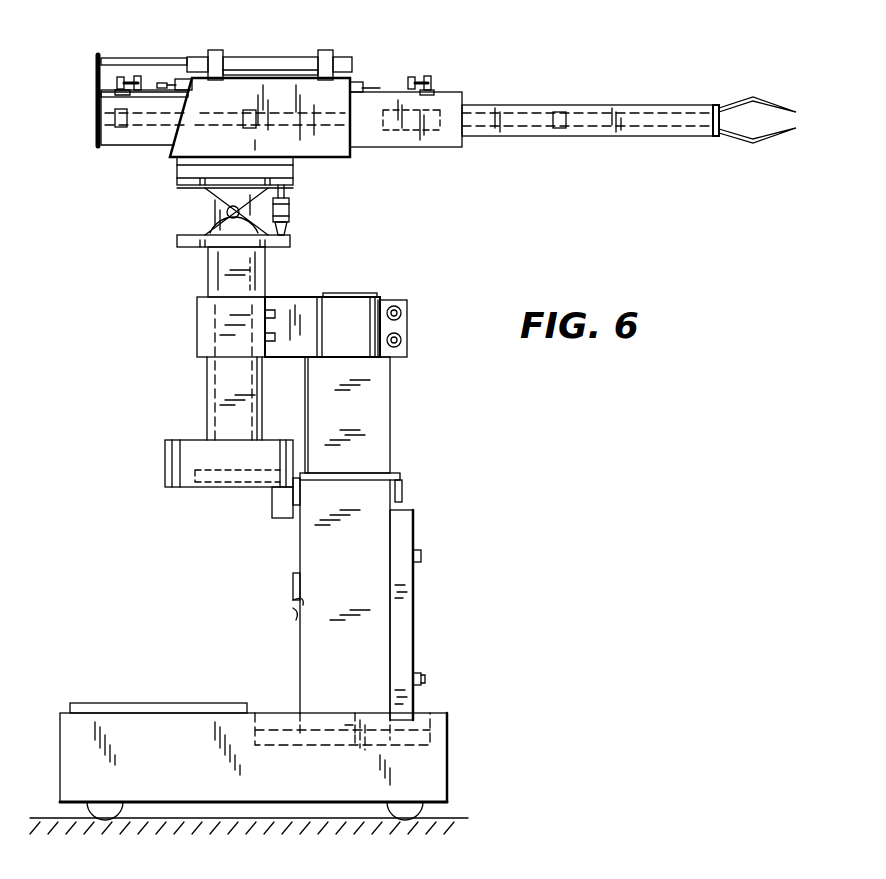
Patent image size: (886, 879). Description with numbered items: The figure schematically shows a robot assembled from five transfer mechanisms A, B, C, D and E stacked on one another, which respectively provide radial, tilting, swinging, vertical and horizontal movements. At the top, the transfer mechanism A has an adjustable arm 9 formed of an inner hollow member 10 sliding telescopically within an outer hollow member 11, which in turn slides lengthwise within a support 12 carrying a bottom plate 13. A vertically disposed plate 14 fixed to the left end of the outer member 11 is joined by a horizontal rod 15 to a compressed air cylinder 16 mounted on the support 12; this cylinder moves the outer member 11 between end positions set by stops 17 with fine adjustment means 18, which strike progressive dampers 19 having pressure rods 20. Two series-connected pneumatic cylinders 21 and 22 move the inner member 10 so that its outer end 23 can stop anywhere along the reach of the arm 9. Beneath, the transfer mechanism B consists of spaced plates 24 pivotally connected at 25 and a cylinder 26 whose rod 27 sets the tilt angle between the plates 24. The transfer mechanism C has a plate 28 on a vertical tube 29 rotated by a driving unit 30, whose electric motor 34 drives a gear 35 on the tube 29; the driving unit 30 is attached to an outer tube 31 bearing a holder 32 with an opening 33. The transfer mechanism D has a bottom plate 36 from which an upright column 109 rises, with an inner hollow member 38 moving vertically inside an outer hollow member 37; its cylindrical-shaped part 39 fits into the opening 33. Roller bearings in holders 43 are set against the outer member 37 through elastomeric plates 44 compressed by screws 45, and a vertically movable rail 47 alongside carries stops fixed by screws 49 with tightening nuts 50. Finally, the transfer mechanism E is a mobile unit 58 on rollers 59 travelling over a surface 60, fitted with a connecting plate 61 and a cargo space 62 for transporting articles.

The transfer mechanism A is at (422, 100).
The transfer mechanism B is at (230, 238).
The transfer mechanism C is at (283, 395).
The transfer mechanism D is at (347, 596).
The transfer mechanism E is at (267, 751).
The adjustable arm 9 is at (536, 159).
The inner hollow member 10 is at (625, 105).
The outer hollow member 11 is at (452, 147).
The support 12 is at (350, 157).
The bottom plate 13 is at (180, 170).
The vertically disposed plate 14 is at (95, 140).
The horizontal rod 15 is at (118, 58).
The compressed air cylinder 16 is at (278, 58).
The stops 17 is at (112, 96).
The fine adjustment means 18 is at (130, 78).
The progressive dampers 19 is at (185, 79).
The pressure rods 20 is at (162, 83).
The pneumatically operable cylinder 21 is at (132, 138).
The pneumatically operable cylinder 22 is at (527, 110).
The outer end 23 is at (718, 136).
The plates 24 is at (185, 190).
The pivot 25 is at (226, 210).
The cylinder 26 is at (290, 212).
The rod 27 is at (286, 192).
The plate 28 is at (180, 247).
The vertical tube 29 is at (266, 272).
The driving unit 30 is at (168, 455).
The outer tube 31 is at (210, 408).
The holder 32 is at (408, 315).
The opening 33 is at (378, 300).
The electric motor 34 is at (272, 513).
The gear 35 is at (195, 485).
The bottom plate 36 is at (450, 735).
The outer hollow member 37 is at (300, 680).
The inner hollow member 38 is at (390, 434).
The cylindrical-shaped part 39 is at (360, 297).
The holders 43 is at (300, 600).
The plates 44 is at (300, 610).
The screws 45 is at (292, 593).
The vertically movable rail 47 is at (413, 520).
The screws 49 is at (421, 683).
The tightening nuts 50 is at (422, 676).
The mobile unit 58 is at (435, 772).
The rollers 59 is at (405, 808).
The surface 60 is at (458, 818).
The plate 61 is at (180, 703).
The cargo space 62 is at (262, 715).
The upright column 109 is at (289, 566).